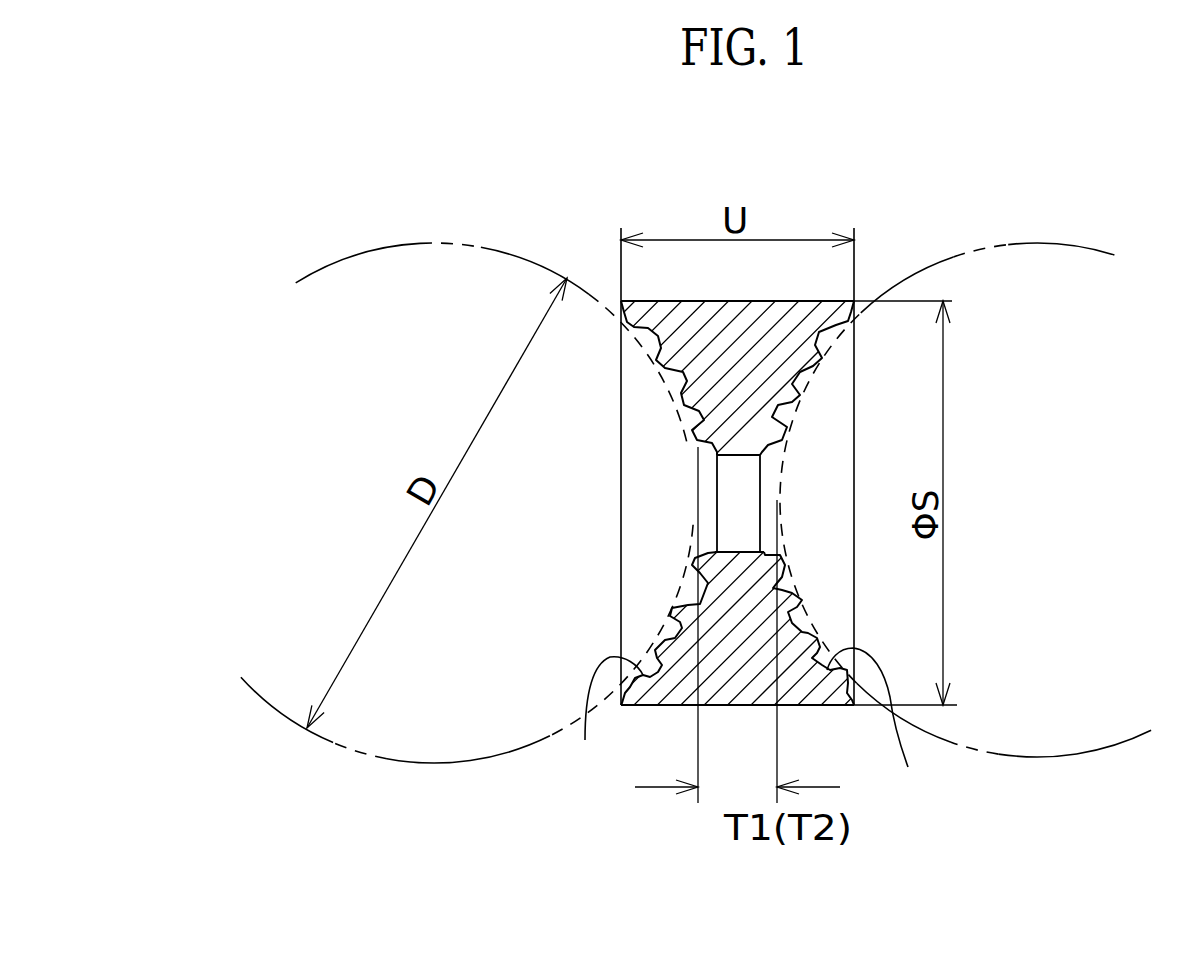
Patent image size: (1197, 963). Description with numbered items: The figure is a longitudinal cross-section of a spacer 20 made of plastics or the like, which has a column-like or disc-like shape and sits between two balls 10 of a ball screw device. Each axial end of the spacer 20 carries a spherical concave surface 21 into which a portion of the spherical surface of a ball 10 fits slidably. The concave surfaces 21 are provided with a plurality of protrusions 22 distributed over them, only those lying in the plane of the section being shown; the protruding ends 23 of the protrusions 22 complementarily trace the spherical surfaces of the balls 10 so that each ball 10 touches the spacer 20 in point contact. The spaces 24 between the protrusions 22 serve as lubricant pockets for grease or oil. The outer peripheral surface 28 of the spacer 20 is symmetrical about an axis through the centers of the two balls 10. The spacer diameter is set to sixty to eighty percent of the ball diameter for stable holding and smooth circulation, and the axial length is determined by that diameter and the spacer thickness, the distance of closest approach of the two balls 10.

The ball 10 is at (333, 283).
The spacer 20 is at (786, 168).
The concave surface 21 is at (585, 740).
The protrusion 22 is at (668, 612).
The protruding end 23 is at (672, 608).
The space 24 is at (660, 618).
The outer peripheral surface 28 is at (660, 705).